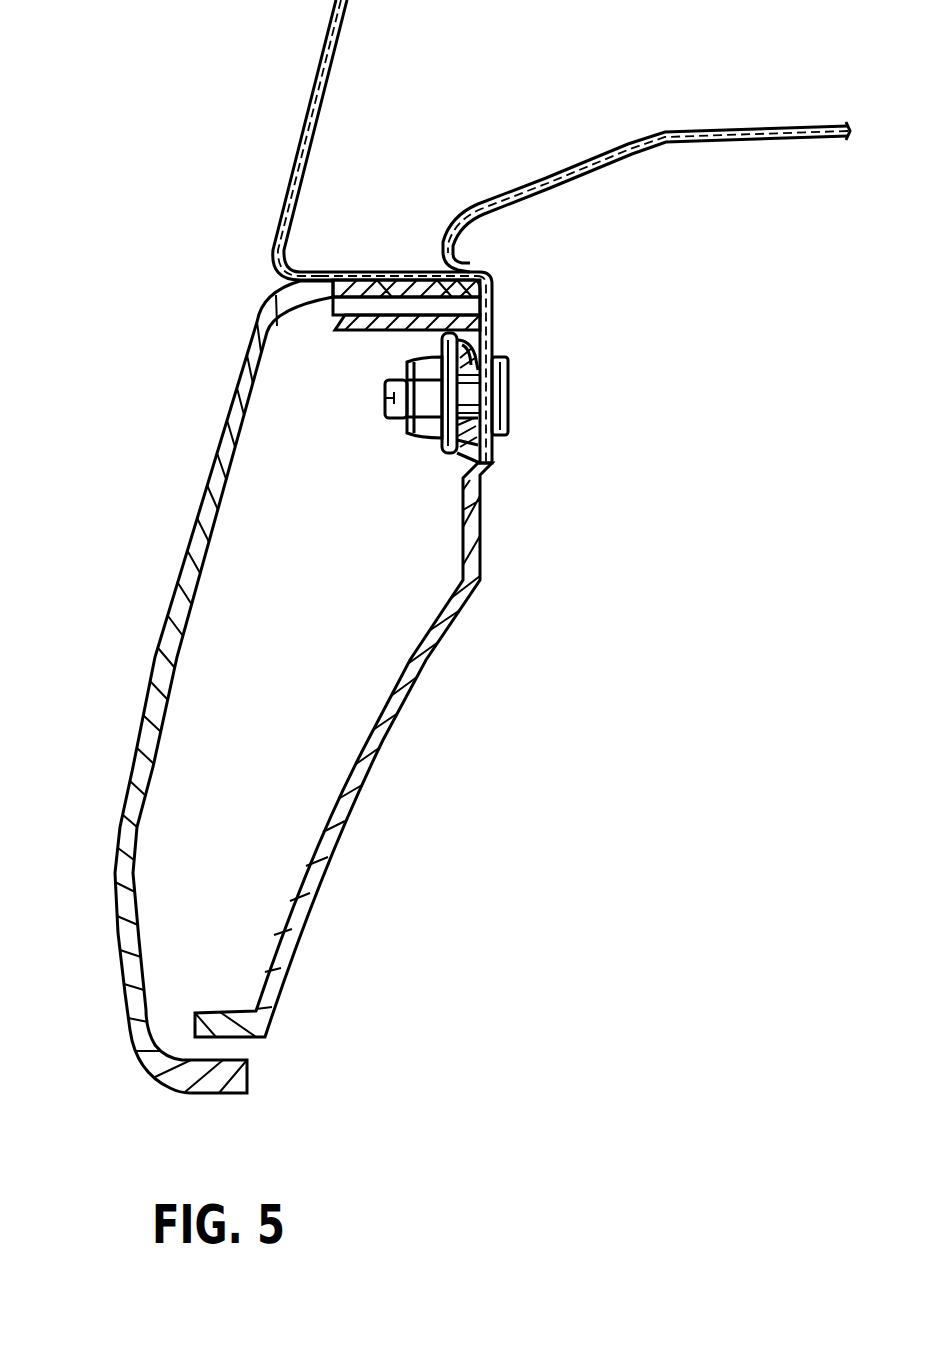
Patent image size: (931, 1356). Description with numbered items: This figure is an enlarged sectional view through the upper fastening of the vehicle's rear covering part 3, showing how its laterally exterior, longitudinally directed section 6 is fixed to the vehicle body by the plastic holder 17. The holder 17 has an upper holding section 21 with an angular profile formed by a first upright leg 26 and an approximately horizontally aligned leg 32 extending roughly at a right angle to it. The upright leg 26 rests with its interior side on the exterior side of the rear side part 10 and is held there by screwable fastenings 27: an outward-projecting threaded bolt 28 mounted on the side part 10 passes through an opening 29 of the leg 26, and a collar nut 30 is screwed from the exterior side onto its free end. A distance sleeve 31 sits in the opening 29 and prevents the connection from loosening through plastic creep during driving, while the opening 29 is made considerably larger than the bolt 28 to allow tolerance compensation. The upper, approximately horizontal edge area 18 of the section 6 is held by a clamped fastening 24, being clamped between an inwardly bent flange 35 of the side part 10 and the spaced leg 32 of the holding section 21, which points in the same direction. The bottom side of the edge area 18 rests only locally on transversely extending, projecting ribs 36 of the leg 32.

The covering part 3 is at (146, 658).
The longitudinally directed section 6 is at (205, 515).
The rear side part 10 is at (504, 295).
The holder 17 is at (447, 650).
The upper edge area 18 is at (440, 302).
The upper holding section 21 is at (355, 346).
The clamped fastening 24 is at (270, 281).
The first upright leg 26 is at (492, 499).
The screwable fastening 27 is at (416, 470).
The threaded bolt 28 is at (396, 403).
The opening 29 is at (503, 431).
The collar nut 30 is at (410, 428).
The distance sleeve 31 is at (488, 330).
The horizontally aligned leg 32 is at (392, 277).
The inwardly bent flange 35 is at (336, 270).
The projecting rib 36 is at (458, 266).